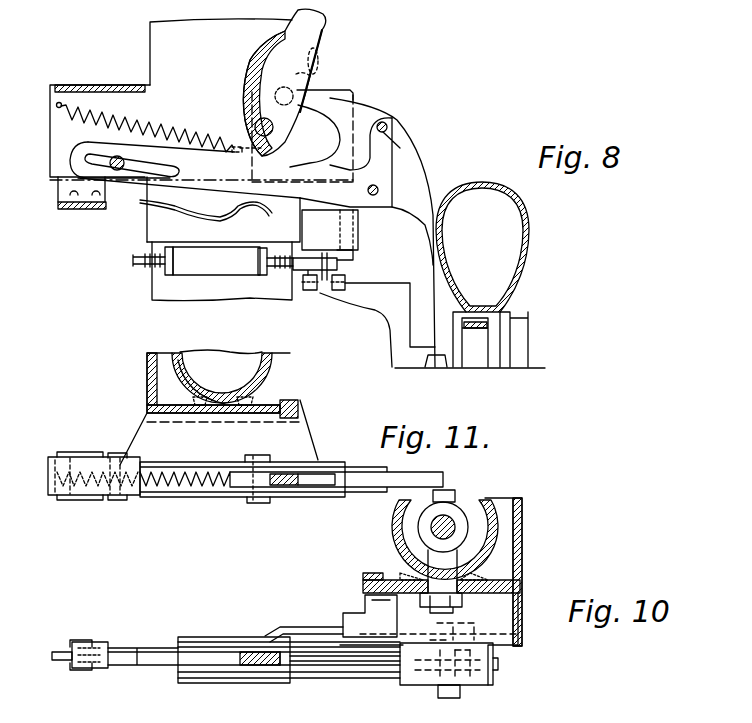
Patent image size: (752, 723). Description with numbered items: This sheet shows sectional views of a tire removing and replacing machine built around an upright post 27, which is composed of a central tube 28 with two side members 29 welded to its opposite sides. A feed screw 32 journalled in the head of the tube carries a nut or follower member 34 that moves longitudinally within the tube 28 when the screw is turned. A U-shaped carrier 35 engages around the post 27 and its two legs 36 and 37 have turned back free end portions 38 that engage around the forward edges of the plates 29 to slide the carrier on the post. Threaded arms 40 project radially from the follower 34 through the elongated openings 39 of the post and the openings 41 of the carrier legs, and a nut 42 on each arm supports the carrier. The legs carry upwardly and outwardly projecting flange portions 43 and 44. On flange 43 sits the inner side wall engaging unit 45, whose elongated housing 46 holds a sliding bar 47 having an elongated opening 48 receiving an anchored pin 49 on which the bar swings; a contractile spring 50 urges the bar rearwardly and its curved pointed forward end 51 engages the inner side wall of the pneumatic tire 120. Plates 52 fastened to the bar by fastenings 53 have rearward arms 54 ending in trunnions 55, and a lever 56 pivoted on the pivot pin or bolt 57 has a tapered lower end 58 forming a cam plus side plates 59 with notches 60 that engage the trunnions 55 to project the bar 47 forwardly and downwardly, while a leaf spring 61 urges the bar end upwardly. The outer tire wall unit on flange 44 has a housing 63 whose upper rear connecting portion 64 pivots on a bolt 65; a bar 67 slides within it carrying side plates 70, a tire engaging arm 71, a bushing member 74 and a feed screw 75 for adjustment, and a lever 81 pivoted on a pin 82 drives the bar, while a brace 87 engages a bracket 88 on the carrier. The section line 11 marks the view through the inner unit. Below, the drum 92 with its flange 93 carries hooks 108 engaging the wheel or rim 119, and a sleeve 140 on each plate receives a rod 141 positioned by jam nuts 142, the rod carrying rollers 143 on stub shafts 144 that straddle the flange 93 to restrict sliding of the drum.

In FIG. 8, the section line 11- 11 is at (120, 37).
In FIG. 11, the post 27 is at (187, 351).
In FIG. 10, the post 27 is at (523, 532).
In FIG. 11, the tube 28 is at (263, 354).
In FIG. 8, the side members 29 is at (155, 300).
In FIG. 11, the side members 29 is at (262, 405).
In FIG. 10, the side members 29 is at (512, 582).
In FIG. 10, the feed screw 32 is at (432, 524).
In FIG. 10, the nut or follower member 34 is at (422, 528).
In FIG. 11, the carrier 35 is at (140, 384).
In FIG. 10, the carrier 35 is at (522, 505).
In FIG. 11, the leg 36 is at (307, 428).
In FIG. 10, the leg 37 is at (520, 593).
In FIG. 11, the turned back free end portions 38 is at (296, 400).
In FIG. 10, the turned back free end portions 38 is at (377, 578).
In FIG. 10, the elongated openings 39 is at (470, 582).
In FIG. 11, the threaded arms 40 is at (452, 489).
In FIG. 10, the threaded arms 40 is at (455, 492).
In FIG. 10, the openings 41 is at (468, 604).
In FIG. 10, the nut 42 is at (435, 612).
In FIG. 8, the flange portion 43 is at (147, 234).
In FIG. 10, the flange portion 44 is at (510, 651).
In FIG. 8, the inner side wall engaging unit 45 is at (401, 117).
In FIG. 8, the housing 46 is at (350, 90).
In FIG. 11, the housing 46 is at (210, 508).
In FIG. 8, the bar 47 is at (293, 166).
In FIG. 11, the bar 47 is at (298, 503).
In FIG. 8, the elongated opening 48 is at (155, 166).
In FIG. 8, the pin 49 is at (115, 158).
In FIG. 11, the pin 49 is at (119, 500).
In FIG. 8, the contractile spring 50 is at (132, 122).
In FIG. 11, the contractile spring 50 is at (170, 495).
In FIG. 8, the forward end 51 is at (417, 190).
In FIG. 11, the forward end 51 is at (405, 478).
In FIG. 8, the plates 52 is at (351, 112).
In FIG. 11, the plates 52 is at (344, 498).
In FIG. 8, the fastenings 53 is at (378, 188).
In FIG. 8, the arms 54 is at (303, 104).
In FIG. 8, the trunnion 55 is at (305, 78).
In FIG. 8, the lever 56 is at (330, 30).
In FIG. 11, the lever 56 is at (317, 447).
In FIG. 8, the pivot pin or bolt 57 is at (257, 121).
In FIG. 11, the pivot pin or bolt 57 is at (255, 455).
In FIG. 8, the tapered lower end 58 is at (240, 149).
In FIG. 8, the plates 59 is at (258, 52).
In FIG. 11, the plates 59 is at (287, 462).
In FIG. 8, the notches 60 is at (320, 54).
In FIG. 8, the leaf spring 61 is at (128, 207).
In FIG. 10, the housing 63 is at (373, 690).
In FIG. 10, the upper rear connecting portion 64 is at (418, 681).
In FIG. 10, the bolt 65 is at (458, 698).
In FIG. 10, the bar 67 is at (326, 663).
In FIG. 10, the side plates 70 is at (140, 663).
In FIG. 10, the tire engaging arm 71 is at (140, 648).
In FIG. 10, the bushing member 74 is at (92, 670).
In FIG. 10, the feed screw 75 is at (66, 666).
In FIG. 10, the lever 81 is at (286, 683).
In FIG. 10, the pin 82 is at (266, 685).
In FIG. 10, the brace 87 is at (318, 629).
In FIG. 10, the flange or bracket 88 is at (358, 614).
In FIG. 8, the drum 92 is at (386, 336).
In FIG. 8, the flange 93 is at (327, 292).
In FIG. 8, the hook 108 is at (435, 370).
In FIG. 8, the wheel or rim 119 is at (480, 370).
In FIG. 8, the pneumatic tire 120 is at (525, 350).
In FIG. 8, the sleeve 140 is at (208, 276).
In FIG. 8, the rod 141 is at (345, 263).
In FIG. 8, the jam nuts 142 is at (163, 286).
In FIG. 8, the rollers 143 is at (300, 288).
In FIG. 8, the stub shafts 144 is at (348, 283).